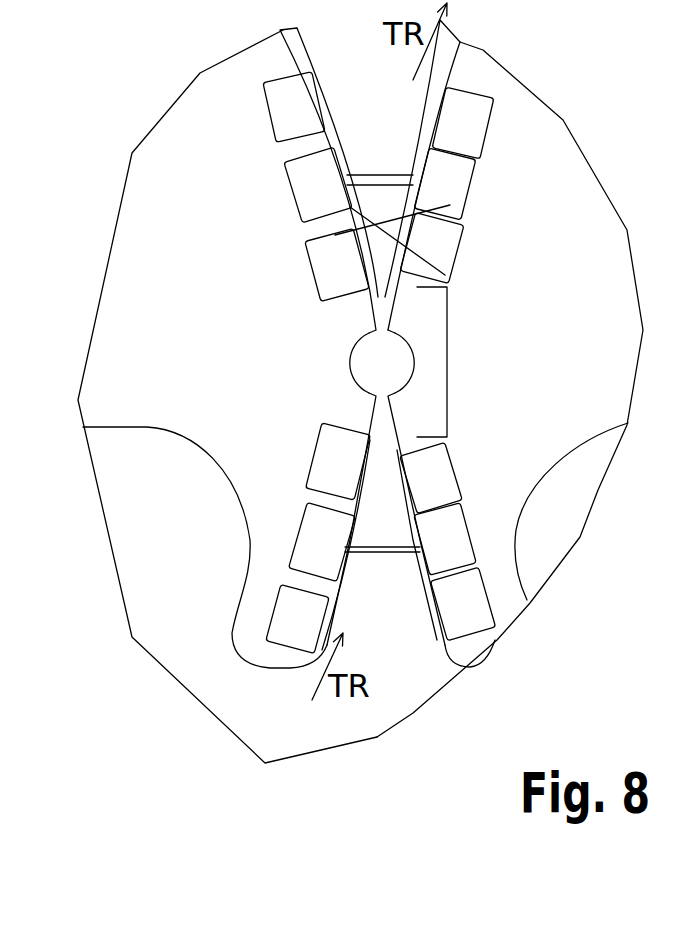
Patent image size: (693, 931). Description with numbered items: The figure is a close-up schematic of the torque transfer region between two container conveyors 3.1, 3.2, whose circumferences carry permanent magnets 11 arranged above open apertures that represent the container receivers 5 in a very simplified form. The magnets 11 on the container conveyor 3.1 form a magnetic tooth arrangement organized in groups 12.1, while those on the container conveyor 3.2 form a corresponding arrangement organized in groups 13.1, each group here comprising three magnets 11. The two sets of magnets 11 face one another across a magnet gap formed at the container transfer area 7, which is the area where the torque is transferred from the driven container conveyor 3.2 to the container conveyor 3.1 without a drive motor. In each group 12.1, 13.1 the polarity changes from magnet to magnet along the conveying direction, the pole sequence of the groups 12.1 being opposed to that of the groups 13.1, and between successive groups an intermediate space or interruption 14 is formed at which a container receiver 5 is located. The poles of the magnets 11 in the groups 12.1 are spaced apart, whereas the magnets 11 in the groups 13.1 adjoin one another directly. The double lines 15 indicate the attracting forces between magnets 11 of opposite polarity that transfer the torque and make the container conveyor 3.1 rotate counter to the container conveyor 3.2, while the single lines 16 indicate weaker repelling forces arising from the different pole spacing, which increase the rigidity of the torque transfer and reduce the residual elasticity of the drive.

The container conveyor 3.1 is at (153, 178).
The container conveyor 3.2 is at (547, 140).
The container receiver 5 is at (343, 362).
The container transfer area 7 is at (379, 540).
The magnets 11 is at (282, 630).
The group of magnets 12.1 is at (264, 173).
The group of magnets 13.1 is at (491, 222).
The intermediate space or interruption 14 is at (447, 362).
The double lines 15 is at (380, 135).
The single lines 16 is at (400, 517).